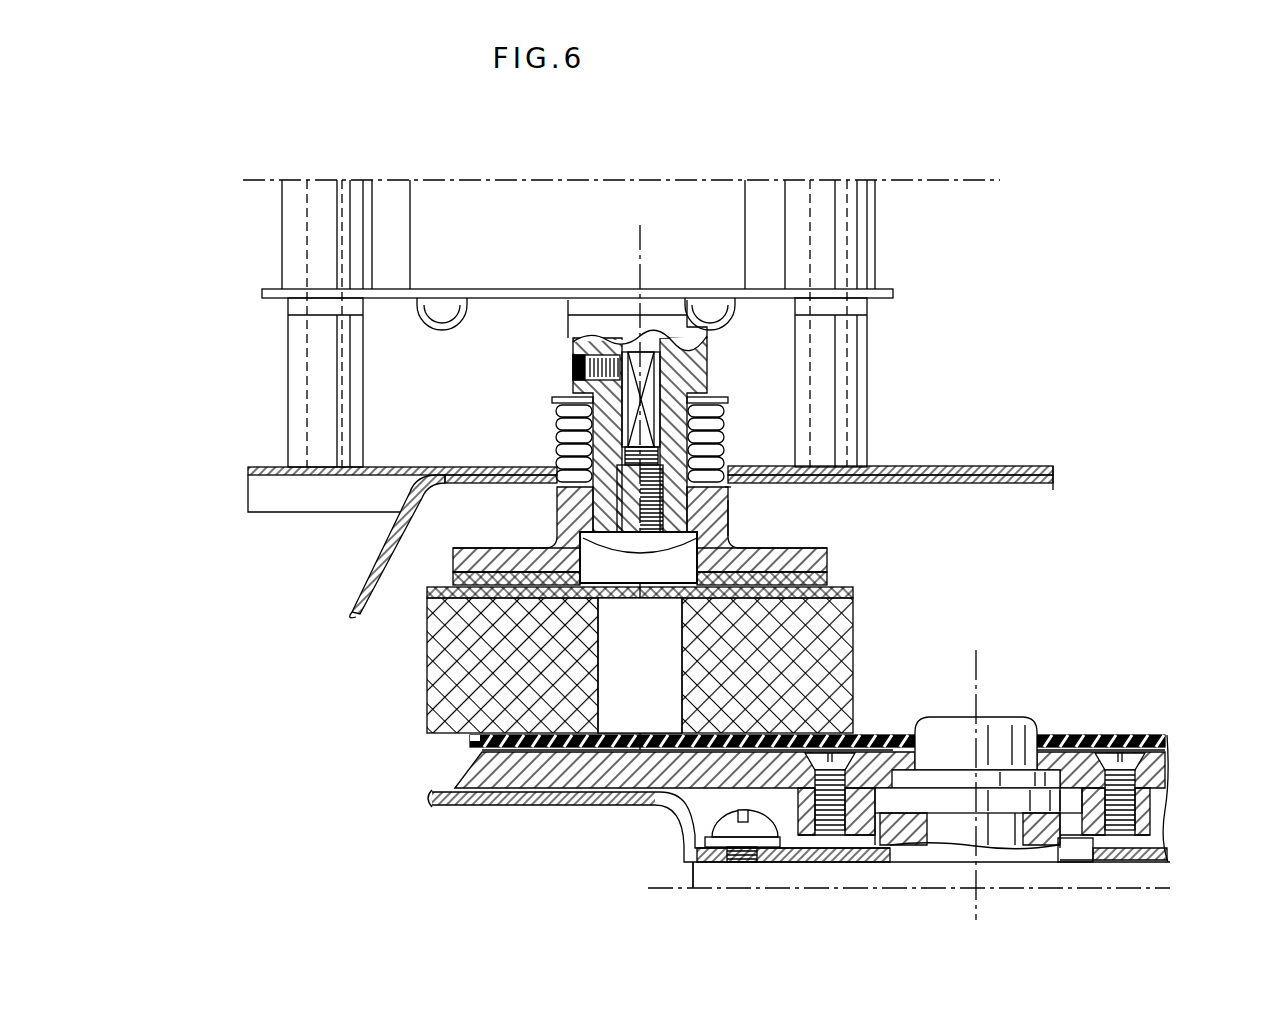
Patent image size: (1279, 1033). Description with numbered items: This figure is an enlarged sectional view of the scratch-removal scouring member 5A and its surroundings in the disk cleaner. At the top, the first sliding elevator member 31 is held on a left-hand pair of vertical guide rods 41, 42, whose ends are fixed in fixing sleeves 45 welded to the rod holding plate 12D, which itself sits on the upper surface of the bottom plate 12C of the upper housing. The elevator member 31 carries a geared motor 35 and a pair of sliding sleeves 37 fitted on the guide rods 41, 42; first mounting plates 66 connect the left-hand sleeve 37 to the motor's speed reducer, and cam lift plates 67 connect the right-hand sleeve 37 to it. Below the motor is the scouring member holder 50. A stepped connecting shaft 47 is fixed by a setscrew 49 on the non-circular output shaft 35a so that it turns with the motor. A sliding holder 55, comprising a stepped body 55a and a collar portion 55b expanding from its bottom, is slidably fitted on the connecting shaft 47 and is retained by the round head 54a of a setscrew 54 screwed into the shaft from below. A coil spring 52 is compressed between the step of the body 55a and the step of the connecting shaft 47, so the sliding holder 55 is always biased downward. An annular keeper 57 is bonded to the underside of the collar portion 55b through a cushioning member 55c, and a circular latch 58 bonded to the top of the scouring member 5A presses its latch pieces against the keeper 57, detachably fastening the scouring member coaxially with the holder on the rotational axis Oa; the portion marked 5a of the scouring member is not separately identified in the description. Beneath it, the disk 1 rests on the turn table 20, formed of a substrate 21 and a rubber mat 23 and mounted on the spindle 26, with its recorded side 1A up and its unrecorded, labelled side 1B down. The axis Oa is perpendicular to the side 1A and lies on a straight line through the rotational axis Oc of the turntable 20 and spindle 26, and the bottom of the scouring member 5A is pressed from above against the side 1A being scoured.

The disk 1 is at (545, 750).
The recorded side 1A is at (477, 740).
The unrecorded side 1B is at (480, 756).
The scouring member for scratch removal 5A is at (452, 688).
The hole in elastic block 5a is at (598, 705).
The bottom plate 12C is at (377, 558).
The rod holding plate 12D is at (280, 466).
The turn table 20 is at (575, 797).
The substrate 21 is at (1165, 790).
The rubber mat 23 is at (1165, 740).
The spindle 26 is at (1010, 725).
The first sliding elevator member 31 is at (280, 275).
The geared motor 35 is at (735, 222).
The output shaft 35a is at (600, 352).
The sliding sleeves 37 is at (288, 222).
The guide rod 41 is at (305, 255).
The guide rod 42 is at (870, 228).
The fixing sleeves 45 is at (295, 375).
The stepped connecting shaft 47 is at (690, 368).
The setscrew 49 is at (600, 368).
The scouring member holder 50 is at (740, 535).
The coil spring 52 is at (575, 432).
The setscrew 54 is at (668, 505).
The round head 54a is at (634, 545).
The sliding holder 55 is at (545, 512).
The stepped body 55a is at (728, 490).
The collar portion 55b is at (827, 565).
The cushioning member 55c is at (828, 580).
The annular keeper 57 is at (455, 585).
The circular latch 58 is at (392, 598).
The first mounting plates 66 is at (388, 295).
The cam lift plates 67 is at (762, 293).
The rotational axis Oa is at (640, 232).
The rotational axis Oc is at (980, 650).